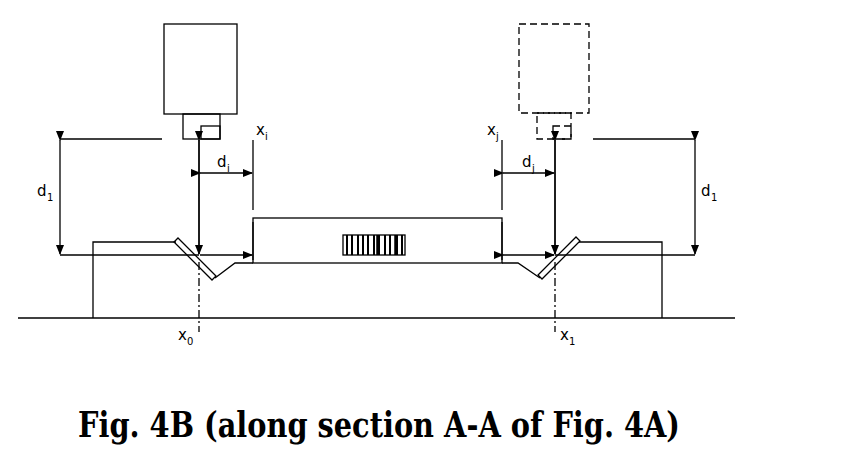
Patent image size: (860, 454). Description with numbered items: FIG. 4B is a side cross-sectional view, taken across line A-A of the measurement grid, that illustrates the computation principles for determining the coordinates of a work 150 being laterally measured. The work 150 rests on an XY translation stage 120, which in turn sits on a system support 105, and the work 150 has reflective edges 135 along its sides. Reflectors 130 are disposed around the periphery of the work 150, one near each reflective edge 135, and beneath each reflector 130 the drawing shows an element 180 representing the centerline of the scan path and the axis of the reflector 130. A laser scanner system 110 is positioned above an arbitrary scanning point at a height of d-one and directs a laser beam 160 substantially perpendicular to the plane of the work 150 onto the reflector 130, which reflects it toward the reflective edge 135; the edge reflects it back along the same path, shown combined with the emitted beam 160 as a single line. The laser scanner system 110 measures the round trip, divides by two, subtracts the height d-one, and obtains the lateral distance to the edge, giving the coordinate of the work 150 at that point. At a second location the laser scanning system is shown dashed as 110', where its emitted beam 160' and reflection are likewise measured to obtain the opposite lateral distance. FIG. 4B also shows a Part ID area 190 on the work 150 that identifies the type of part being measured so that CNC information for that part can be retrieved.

The system support 105 is at (60, 318).
The laser scanner system 110 is at (227, 81).
The laser scanning system at second location 110' is at (527, 81).
The XY translation stage 120 is at (163, 307).
The reflector 130 is at (187, 238).
The reflective edge 135 is at (252, 232).
The work 150 is at (315, 217).
The laser beam 160 is at (166, 197).
The emitted beam at second location 160' is at (594, 197).
The scan path centerline 180 is at (200, 285).
The Part ID area 190 is at (380, 233).